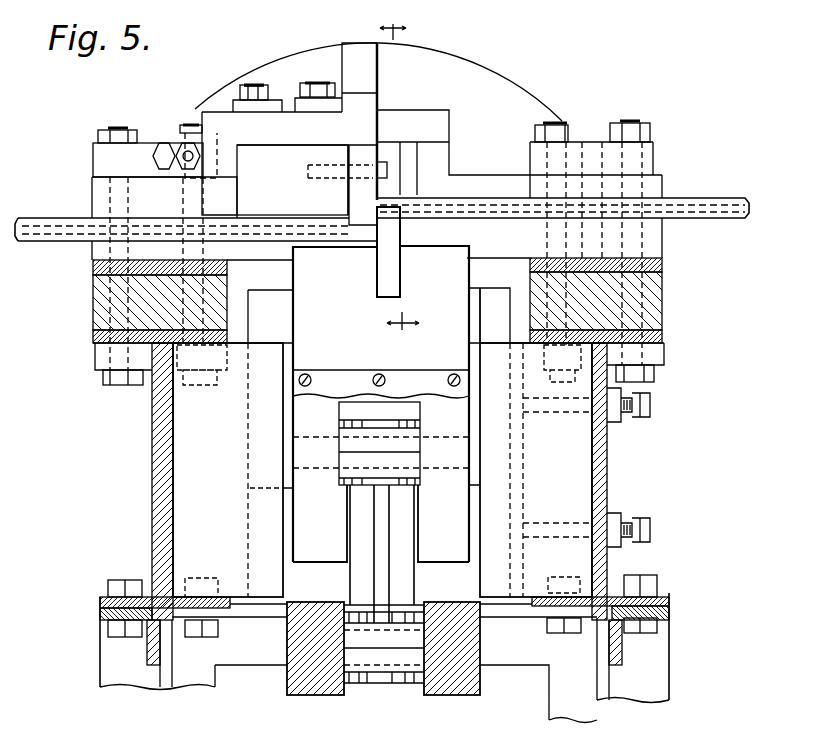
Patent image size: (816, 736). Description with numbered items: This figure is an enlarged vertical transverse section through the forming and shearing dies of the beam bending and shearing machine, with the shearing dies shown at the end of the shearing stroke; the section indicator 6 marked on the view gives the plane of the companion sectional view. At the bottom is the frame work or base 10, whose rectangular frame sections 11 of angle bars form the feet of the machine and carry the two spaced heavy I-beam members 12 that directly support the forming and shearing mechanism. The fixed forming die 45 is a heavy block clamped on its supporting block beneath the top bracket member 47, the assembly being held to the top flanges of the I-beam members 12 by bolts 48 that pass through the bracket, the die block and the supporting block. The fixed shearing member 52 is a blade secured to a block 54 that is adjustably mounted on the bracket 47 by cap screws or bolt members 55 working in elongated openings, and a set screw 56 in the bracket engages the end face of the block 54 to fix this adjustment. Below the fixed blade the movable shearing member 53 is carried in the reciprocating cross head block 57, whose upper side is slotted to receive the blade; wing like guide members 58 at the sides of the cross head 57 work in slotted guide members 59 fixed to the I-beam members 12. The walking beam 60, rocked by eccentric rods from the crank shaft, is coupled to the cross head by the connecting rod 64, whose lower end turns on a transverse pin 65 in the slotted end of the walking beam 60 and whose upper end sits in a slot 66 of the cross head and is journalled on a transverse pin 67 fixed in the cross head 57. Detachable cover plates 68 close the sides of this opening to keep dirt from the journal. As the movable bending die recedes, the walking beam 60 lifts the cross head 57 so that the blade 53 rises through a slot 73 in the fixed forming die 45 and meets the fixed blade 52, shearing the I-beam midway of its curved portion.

The section line 6- 6 is at (399, 177).
The frame work or base 10 is at (672, 624).
The rectangular frame sections 11 is at (138, 677).
The I-beam members 12 is at (158, 458).
The fixed forming die 45 is at (402, 268).
The top bracket member 47 is at (452, 66).
The bolts 48 is at (186, 124).
The fixed shearing member 52 is at (357, 155).
The movable shearing member 53 is at (395, 227).
The block 54 is at (260, 157).
The cap screws or bolt members 55 is at (301, 92).
The set screw 56 is at (166, 146).
The reciprocating cross head block 57 is at (461, 262).
The wing like guide members 58 is at (403, 257).
The guide members 59 is at (187, 425).
The walking beam 60 is at (460, 684).
The connecting rod 64 is at (405, 535).
The transverse pin 65 is at (394, 676).
The slot 66 is at (344, 473).
The transverse pin 67 is at (437, 445).
The detachable cover plates 68 is at (334, 383).
The slot 73 is at (397, 180).